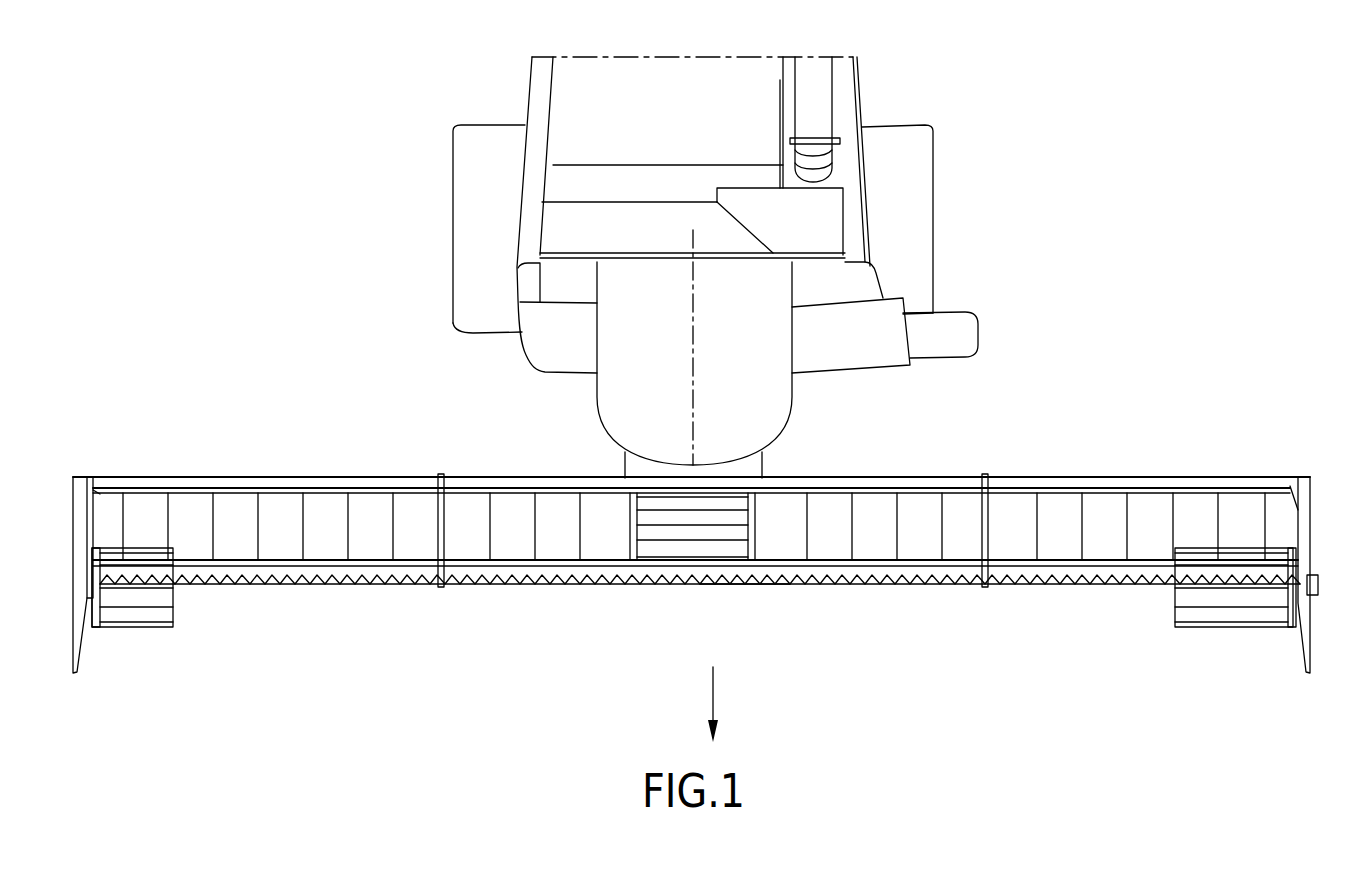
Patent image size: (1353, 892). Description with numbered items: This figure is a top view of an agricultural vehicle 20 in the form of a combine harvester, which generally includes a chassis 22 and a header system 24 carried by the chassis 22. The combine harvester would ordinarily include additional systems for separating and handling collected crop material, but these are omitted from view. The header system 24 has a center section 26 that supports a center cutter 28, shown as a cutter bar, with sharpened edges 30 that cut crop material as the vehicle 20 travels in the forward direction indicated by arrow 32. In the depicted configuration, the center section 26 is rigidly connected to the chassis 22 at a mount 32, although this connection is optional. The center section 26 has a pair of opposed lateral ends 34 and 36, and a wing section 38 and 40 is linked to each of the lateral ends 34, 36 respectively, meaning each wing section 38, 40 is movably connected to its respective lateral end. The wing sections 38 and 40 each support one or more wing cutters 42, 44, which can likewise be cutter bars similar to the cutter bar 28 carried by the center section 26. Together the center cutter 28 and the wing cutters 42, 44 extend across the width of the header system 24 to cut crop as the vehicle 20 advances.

The agricultural vehicle 20 is at (1016, 126).
The chassis 22 is at (933, 281).
The header system 24 is at (891, 441).
The center section 26 is at (783, 532).
The center cutter 28 is at (1013, 527).
The sharpened edges 30 is at (752, 583).
The arrow 32 is at (767, 461).
The lateral end 34 is at (980, 523).
The lateral end 36 is at (457, 500).
The wing section 38 is at (1070, 488).
The wing section 40 is at (330, 483).
The wing cutter 42 is at (1103, 576).
The wing cutter 44 is at (337, 579).